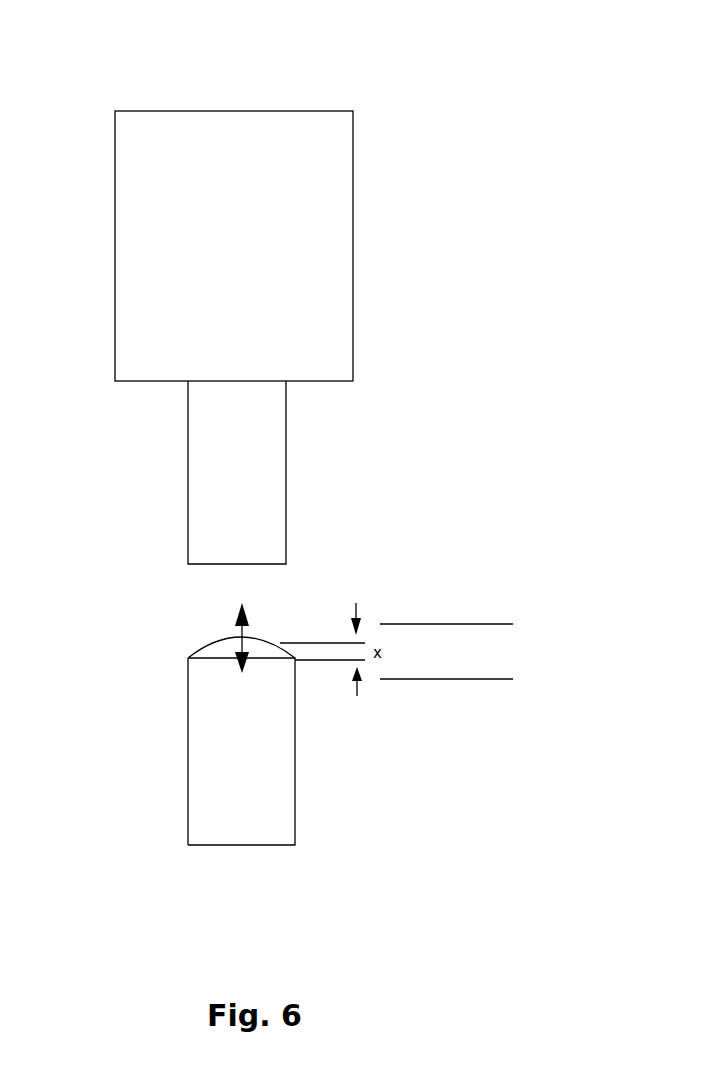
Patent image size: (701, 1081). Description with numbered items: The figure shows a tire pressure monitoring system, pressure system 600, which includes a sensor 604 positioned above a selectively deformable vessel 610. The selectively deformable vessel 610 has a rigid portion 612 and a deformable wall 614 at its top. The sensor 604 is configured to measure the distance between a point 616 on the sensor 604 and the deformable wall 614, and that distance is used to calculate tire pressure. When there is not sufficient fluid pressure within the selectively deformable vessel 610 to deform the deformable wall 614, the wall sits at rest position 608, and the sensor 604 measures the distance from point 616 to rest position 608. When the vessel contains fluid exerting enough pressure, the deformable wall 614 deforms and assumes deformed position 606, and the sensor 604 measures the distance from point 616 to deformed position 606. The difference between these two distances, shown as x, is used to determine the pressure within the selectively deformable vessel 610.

The pressure system 600 is at (172, 101).
The sensor 604 is at (367, 158).
The point 616 is at (287, 561).
The selectively deformable vessel 610 is at (296, 782).
The rigid portion 612 is at (197, 763).
The deformable wall 614 is at (211, 648).
The deformed position 606 is at (453, 619).
The rest position 608 is at (454, 681).